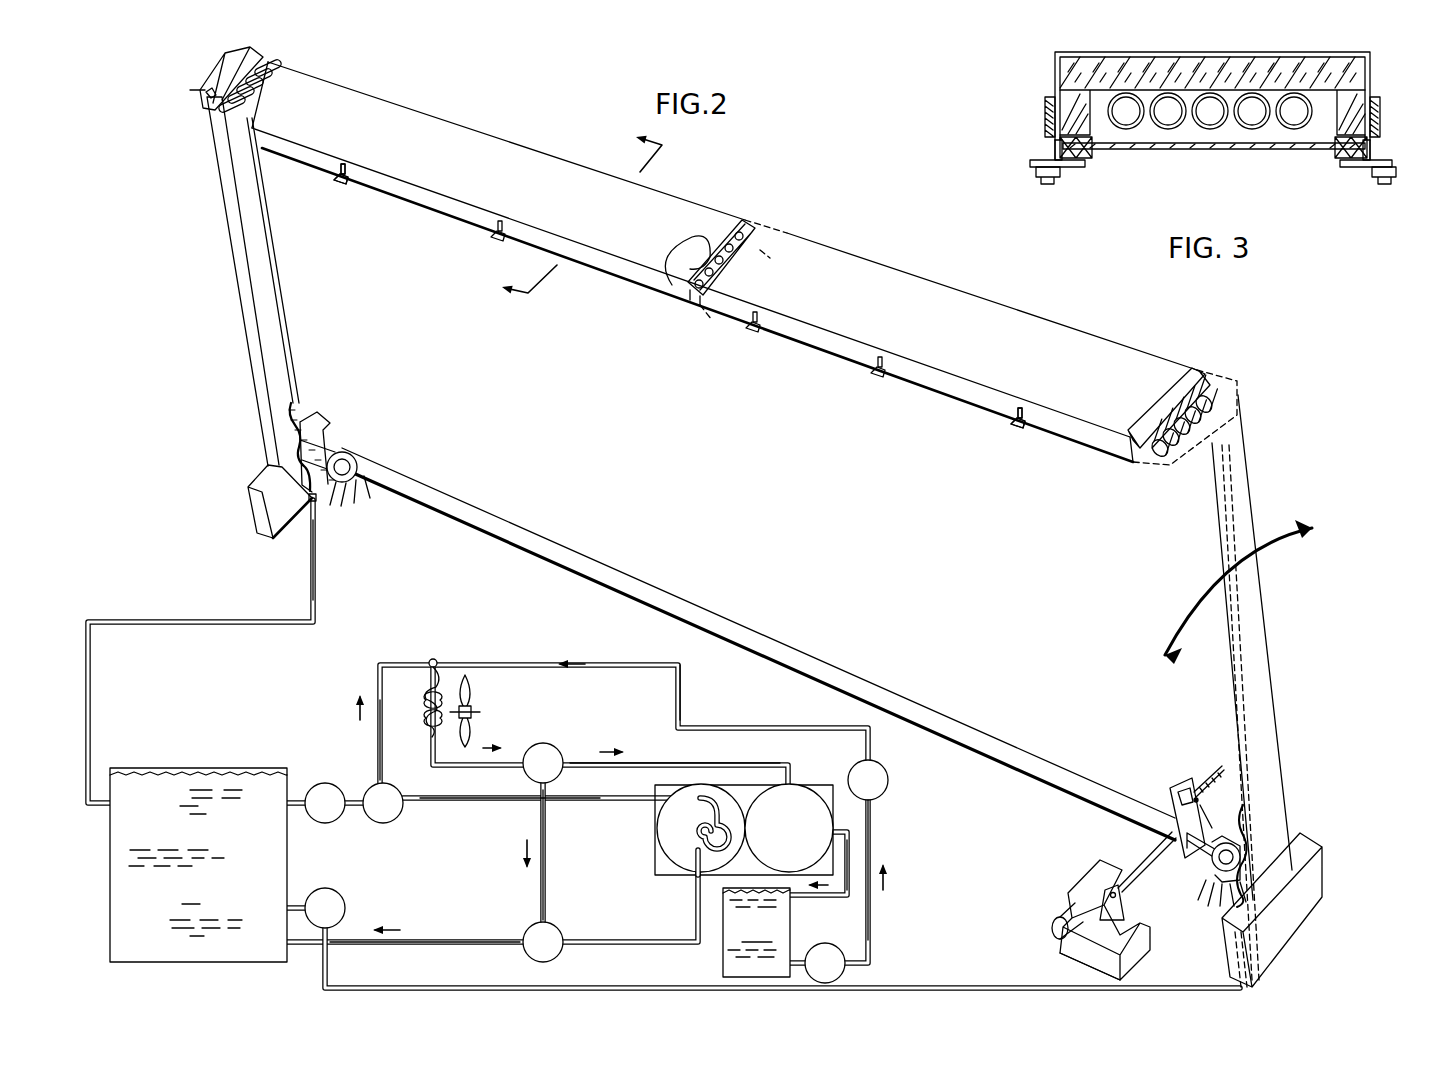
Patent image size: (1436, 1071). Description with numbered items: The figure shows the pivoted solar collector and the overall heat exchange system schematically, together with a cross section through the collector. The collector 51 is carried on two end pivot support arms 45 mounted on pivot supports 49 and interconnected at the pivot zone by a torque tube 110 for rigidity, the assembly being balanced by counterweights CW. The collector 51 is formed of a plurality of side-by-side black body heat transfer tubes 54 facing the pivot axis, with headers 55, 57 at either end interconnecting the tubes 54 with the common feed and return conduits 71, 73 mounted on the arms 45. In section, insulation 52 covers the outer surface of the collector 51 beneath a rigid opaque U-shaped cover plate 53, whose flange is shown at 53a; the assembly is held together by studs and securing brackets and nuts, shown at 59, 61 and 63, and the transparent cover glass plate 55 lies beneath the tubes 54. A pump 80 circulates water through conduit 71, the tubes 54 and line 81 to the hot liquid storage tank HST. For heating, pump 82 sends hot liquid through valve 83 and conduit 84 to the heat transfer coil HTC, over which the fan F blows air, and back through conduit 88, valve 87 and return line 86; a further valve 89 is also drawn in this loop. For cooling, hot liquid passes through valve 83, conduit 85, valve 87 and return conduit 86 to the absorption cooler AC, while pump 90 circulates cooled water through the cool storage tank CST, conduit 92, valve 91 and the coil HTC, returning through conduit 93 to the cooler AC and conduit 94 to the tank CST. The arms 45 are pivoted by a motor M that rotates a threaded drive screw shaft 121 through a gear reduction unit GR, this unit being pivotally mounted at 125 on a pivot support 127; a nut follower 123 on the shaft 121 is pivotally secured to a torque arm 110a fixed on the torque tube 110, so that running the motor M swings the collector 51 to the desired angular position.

In FIG. 2, the collector pivot support arm 45 is at (227, 242).
In FIG. 2, the pivot support 49 is at (344, 440).
In FIG. 2, the collector 51 is at (744, 263).
In FIG. 3, the collector 51 is at (1178, 145).
In FIG. 3, the insulation 52 is at (1055, 62).
In FIG. 2, the U-shaped cover plate 53 is at (403, 102).
In FIG. 3, the U-shaped cover plate 53 is at (1370, 58).
In FIG. 2, the housing flange 53a is at (498, 232).
In FIG. 3, the housing flange 53a is at (1045, 108).
In FIG. 2, the heat transfer tube 54 is at (268, 74).
In FIG. 3, the heat transfer tube 54 is at (1188, 128).
In FIG. 2, the header 55 is at (200, 90).
In FIG. 3, the header 55 is at (1236, 151).
In FIG. 2, the header 57 is at (1210, 390).
In FIG. 3, the header 57 is at (1042, 154).
In FIG. 3, the spacer block 59 is at (1095, 155).
In FIG. 3, the mounting bolt 61 is at (1067, 173).
In FIG. 2, the clip fastener 63 is at (499, 256).
In FIG. 3, the clip fastener 63 is at (1055, 140).
In FIG. 2, the feed conduit 71 is at (1207, 545).
In FIG. 2, the return conduit 73 is at (279, 258).
In FIG. 2, the pump 80 is at (346, 898).
In FIG. 2, the line 81 is at (315, 580).
In FIG. 2, the pump 82 is at (323, 783).
In FIG. 2, the valve 83 is at (382, 824).
In FIG. 2, the conduit 84 is at (370, 684).
In FIG. 2, the conduit 85 is at (444, 802).
In FIG. 2, the return line 86 is at (441, 947).
In FIG. 2, the valve 87 is at (559, 927).
In FIG. 2, the conduit 88 is at (540, 848).
In FIG. 2, the valve 89 is at (443, 770).
In FIG. 2, the pump 90 is at (865, 961).
In FIG. 2, the valve 91 is at (890, 780).
In FIG. 2, the conduit 92 is at (680, 712).
In FIG. 2, the conduit 93 is at (644, 761).
In FIG. 2, the conduit 94 is at (808, 894).
In FIG. 2, the torque tube 110 is at (685, 612).
In FIG. 2, the torque arm 110a is at (1202, 813).
In FIG. 2, the threaded drive screw shaft 121 is at (1204, 775).
In FIG. 2, the nut follower 123 is at (1180, 771).
In FIG. 2, the pivot 125 is at (1118, 885).
In FIG. 2, the pivot support 127 is at (1118, 945).
In FIG. 2, the counterweight CW is at (251, 507).
In FIG. 2, the hot liquid storage tank HST is at (288, 850).
In FIG. 2, the heat transfer coil HTC is at (416, 709).
In FIG. 2, the fan F is at (473, 690).
In FIG. 2, the absorption cooler AC is at (802, 780).
In FIG. 2, the cool storage tank CST is at (722, 967).
In FIG. 2, the gear reduction unit GR is at (1058, 885).
In FIG. 2, the motor M is at (1055, 925).